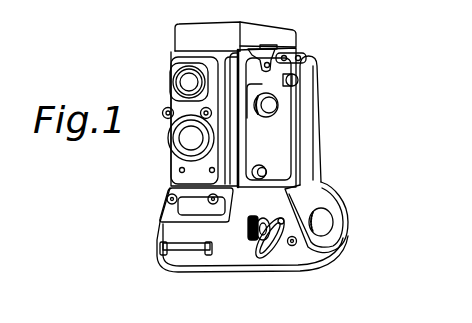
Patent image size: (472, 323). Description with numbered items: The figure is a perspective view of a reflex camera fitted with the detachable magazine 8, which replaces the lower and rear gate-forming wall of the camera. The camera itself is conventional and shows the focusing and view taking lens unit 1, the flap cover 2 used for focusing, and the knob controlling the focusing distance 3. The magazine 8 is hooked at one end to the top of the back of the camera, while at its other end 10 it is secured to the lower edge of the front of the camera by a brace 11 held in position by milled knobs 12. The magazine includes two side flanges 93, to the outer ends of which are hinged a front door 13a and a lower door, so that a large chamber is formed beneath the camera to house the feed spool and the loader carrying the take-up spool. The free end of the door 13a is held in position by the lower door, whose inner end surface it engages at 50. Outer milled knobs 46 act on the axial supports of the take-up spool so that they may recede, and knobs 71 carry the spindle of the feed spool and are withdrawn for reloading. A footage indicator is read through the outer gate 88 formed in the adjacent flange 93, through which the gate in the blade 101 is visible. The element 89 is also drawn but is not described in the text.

The focusing and view taking lens unit 1 is at (176, 85).
The flap cover 2 is at (285, 37).
The knob controlling the focusing distance 3 is at (273, 107).
The detachable magazine 8 is at (308, 71).
The end of the magazine 10 is at (177, 184).
The brace 11 is at (251, 230).
The milled knobs 12 is at (208, 200).
The front door 13a is at (337, 154).
The outer milled knobs 46 is at (341, 211).
The engagement point of the doors 50 is at (349, 234).
The knobs 71 is at (253, 239).
The outer gate 88 is at (269, 262).
The button 89 is at (293, 246).
The side flanges 93 is at (319, 257).
The blade 101 is at (276, 249).